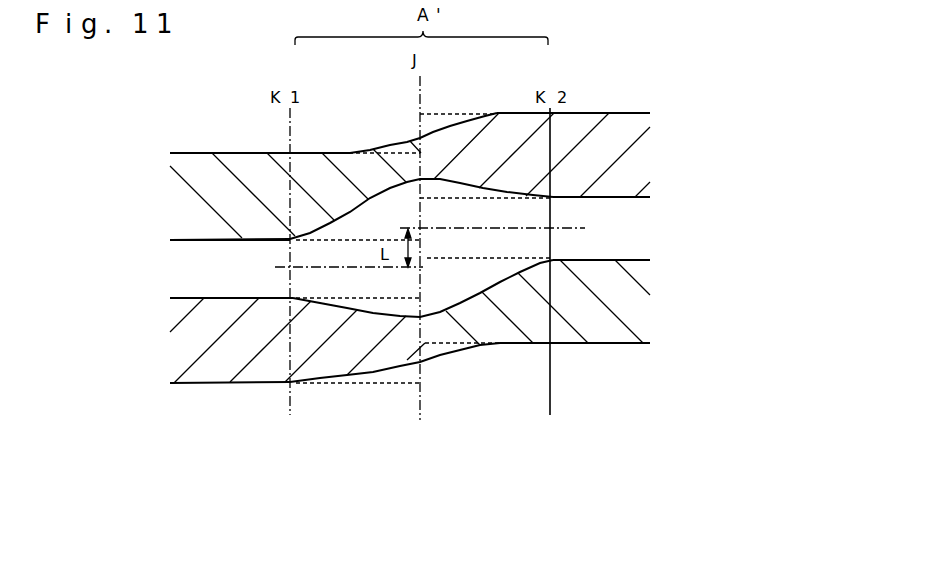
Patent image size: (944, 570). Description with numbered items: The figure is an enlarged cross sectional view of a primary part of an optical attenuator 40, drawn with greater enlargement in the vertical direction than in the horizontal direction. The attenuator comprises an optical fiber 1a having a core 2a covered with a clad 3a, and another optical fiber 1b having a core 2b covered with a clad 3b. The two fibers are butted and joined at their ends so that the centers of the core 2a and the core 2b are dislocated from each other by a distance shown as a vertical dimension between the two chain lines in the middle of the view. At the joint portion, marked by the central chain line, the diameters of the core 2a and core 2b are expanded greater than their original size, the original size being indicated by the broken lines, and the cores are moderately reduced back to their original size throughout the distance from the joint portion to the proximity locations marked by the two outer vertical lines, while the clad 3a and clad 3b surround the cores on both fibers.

The optical fiber 1a is at (744, 346).
The optical fiber 1b is at (106, 388).
The core 2a is at (650, 228).
The core 2b is at (180, 268).
The clad 3a is at (616, 126).
The clad 3b is at (237, 165).
The optical attenuator 40 is at (450, 459).